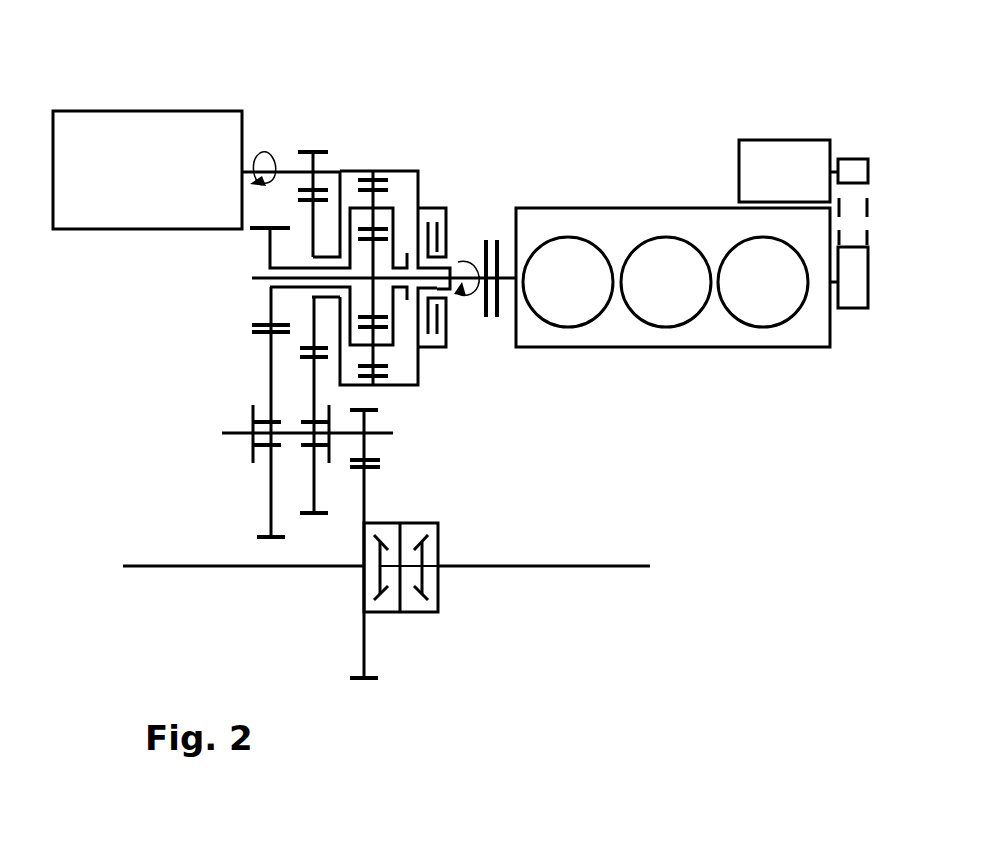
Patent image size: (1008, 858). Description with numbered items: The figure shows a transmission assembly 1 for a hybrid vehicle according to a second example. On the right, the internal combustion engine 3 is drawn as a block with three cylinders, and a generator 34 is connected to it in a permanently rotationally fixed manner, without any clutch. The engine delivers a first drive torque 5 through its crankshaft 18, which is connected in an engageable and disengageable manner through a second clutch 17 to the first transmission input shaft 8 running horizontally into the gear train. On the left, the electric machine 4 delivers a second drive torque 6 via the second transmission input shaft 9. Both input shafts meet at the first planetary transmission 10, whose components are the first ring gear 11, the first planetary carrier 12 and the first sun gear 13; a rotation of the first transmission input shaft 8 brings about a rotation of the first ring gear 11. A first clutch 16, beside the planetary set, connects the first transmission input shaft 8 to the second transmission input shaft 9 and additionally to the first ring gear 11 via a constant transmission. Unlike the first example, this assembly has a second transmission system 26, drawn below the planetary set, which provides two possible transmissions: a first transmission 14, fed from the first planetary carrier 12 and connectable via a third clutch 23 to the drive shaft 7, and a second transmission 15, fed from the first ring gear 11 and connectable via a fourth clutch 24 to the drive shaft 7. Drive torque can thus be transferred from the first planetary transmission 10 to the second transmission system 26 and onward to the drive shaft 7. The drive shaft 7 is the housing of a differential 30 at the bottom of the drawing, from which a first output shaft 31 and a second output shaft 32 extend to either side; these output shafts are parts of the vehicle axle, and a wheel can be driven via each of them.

The transmission assembly 1 is at (445, 138).
The internal combustion engine 3 is at (625, 225).
The electric machine 4 is at (175, 140).
The first drive torque 5 is at (466, 296).
The second drive torque 6 is at (291, 184).
The drive shaft 7 is at (367, 495).
The first transmission input shaft 8 is at (461, 255).
The second transmission input shaft 9 is at (296, 170).
The first planetary transmission 10 is at (385, 152).
The first ring gear 11 is at (352, 170).
The first planetary carrier 12 is at (270, 252).
The first sun gear 13 is at (372, 297).
The first transmission 14 is at (267, 493).
The second transmission 15 is at (316, 478).
The first clutch 16 is at (450, 330).
The second clutch 17 is at (486, 238).
The crankshaft 18 is at (503, 275).
The third clutch 23 is at (250, 455).
The fourth clutch 24 is at (330, 446).
The second transmission system 26 is at (218, 394).
The differential 30 is at (416, 520).
The first output shaft 31 is at (545, 566).
The second output shaft 32 is at (287, 566).
The generator 34 is at (772, 157).